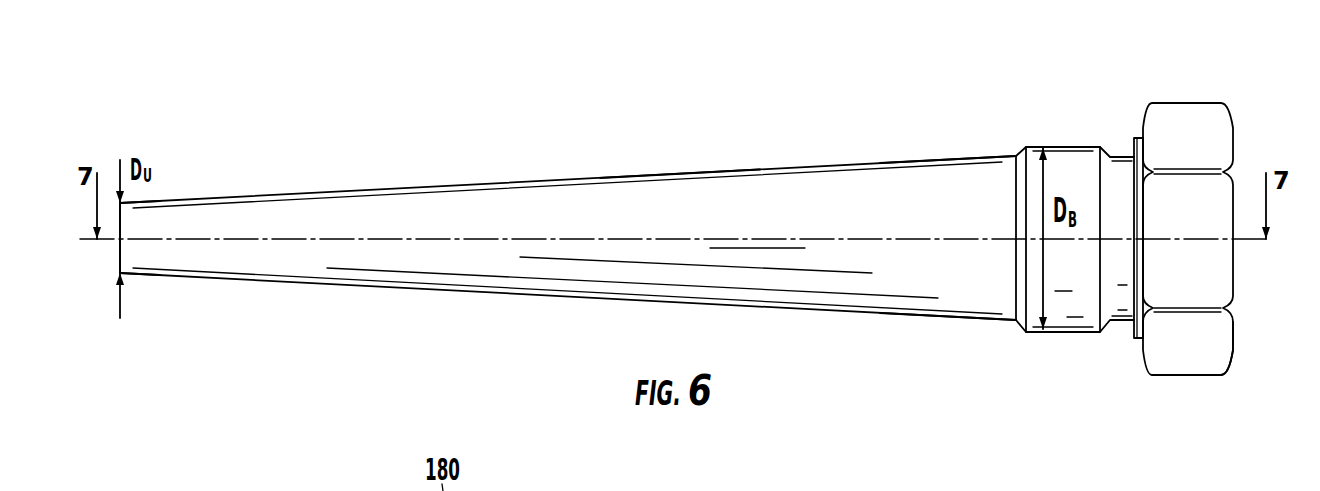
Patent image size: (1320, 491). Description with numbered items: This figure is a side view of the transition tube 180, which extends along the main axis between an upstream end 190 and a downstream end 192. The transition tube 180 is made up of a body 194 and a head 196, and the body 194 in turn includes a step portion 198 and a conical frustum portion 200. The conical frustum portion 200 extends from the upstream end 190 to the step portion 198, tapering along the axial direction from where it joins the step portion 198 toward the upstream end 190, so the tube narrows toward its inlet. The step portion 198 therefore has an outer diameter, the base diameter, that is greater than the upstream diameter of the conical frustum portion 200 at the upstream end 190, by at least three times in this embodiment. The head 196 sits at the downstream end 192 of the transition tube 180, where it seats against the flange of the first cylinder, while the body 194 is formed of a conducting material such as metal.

The transition tube 180 is at (513, 102).
The upstream end 190 is at (144, 318).
The downstream end 192 is at (1226, 392).
The body 194 is at (911, 125).
The head 196 is at (1186, 350).
The step portion 198 is at (1070, 145).
The conical frustum portion 200 is at (688, 172).